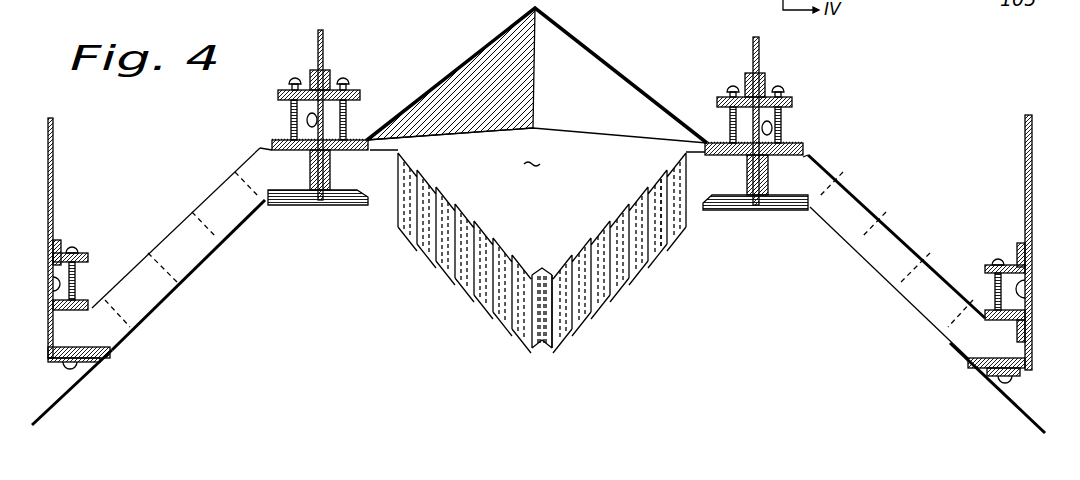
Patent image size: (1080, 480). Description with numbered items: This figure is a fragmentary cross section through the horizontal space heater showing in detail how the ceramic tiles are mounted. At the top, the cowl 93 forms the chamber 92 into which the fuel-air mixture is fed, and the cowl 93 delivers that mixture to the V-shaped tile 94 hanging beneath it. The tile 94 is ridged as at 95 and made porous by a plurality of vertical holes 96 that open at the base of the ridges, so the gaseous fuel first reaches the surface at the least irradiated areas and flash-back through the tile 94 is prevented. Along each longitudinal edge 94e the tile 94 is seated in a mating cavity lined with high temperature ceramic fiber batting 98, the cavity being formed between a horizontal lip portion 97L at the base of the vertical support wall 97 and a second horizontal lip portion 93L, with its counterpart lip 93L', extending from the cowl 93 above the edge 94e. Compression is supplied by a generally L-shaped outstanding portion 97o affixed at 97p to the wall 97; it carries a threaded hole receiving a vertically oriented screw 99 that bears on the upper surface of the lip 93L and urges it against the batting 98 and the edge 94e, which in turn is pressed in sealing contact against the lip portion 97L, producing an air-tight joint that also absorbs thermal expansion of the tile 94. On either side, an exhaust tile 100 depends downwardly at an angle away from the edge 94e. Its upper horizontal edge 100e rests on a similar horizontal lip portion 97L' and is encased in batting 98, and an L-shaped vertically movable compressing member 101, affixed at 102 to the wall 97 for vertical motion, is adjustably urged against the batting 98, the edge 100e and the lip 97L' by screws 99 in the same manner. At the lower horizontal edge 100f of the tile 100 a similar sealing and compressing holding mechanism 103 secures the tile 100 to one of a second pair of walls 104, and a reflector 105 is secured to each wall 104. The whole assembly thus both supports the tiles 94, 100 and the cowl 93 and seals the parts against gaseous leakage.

The chamber 92 is at (532, 152).
The cowl 93 is at (593, 50).
The second horizontal lip portion 93L is at (691, 114).
The horizontal lip portion of the cowl 93L' is at (376, 117).
The V-shaped tile 94 is at (620, 273).
The longitudinal edge 94e is at (385, 155).
The ridges 95 is at (610, 296).
The vertical holes 96 is at (667, 230).
The vertical support wall 97 is at (324, 50).
The affixing point 97p is at (312, 70).
The L-shaped outstanding portion 97o is at (362, 95).
The horizontal lip portion 97L is at (538, 233).
The horizontal lip portion 97L' is at (575, 181).
The high temperature ceramic fiber batting 98 is at (273, 143).
The vertically oriented screw 99 is at (350, 79).
The exhaust tile 100 is at (180, 213).
The upper horizontal edge 100e is at (274, 168).
The lower horizontal edge 100f is at (100, 330).
The L-shaped vertically movable compressing member 101 is at (283, 138).
The affixing point 102 is at (310, 122).
The sealing and compressing holding mechanism 103 is at (97, 267).
The second wall 104 is at (53, 153).
The reflector 105 is at (82, 384).